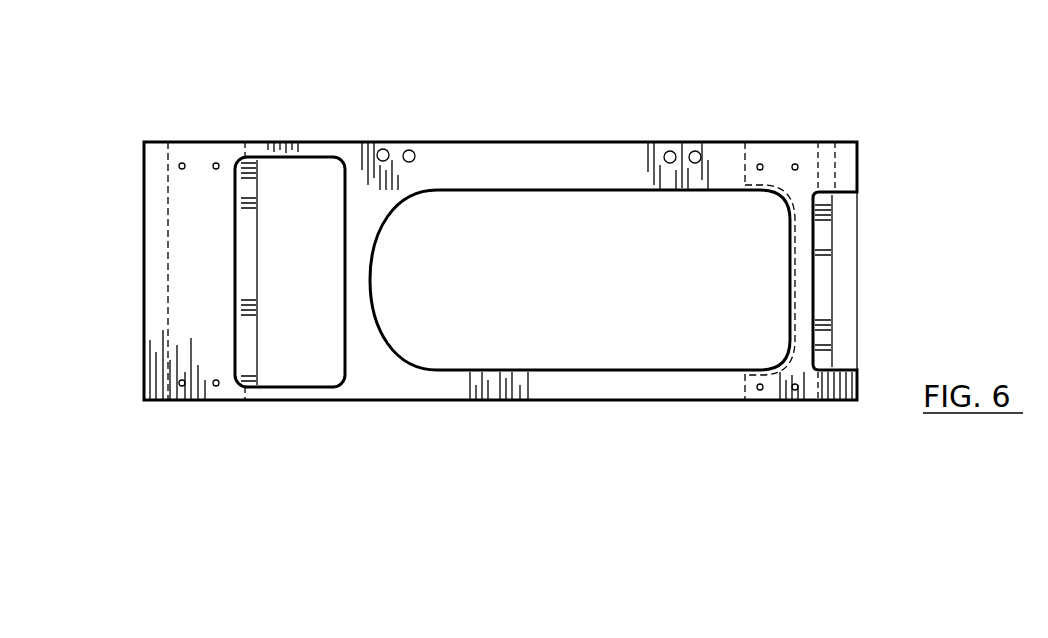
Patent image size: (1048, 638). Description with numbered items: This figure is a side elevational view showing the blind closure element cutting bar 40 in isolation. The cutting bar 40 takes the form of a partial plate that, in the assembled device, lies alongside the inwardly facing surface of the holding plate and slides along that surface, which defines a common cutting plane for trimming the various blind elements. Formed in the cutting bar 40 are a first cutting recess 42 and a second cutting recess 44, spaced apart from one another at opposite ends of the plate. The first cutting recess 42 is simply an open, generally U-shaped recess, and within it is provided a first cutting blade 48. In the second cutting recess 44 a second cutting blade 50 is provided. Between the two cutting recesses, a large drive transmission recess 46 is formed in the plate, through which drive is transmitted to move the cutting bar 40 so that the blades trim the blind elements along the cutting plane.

The cutting bar 40 is at (472, 142).
The first cutting recess 42 is at (853, 249).
The second cutting recess 44 is at (312, 193).
The drive transmission recess 46 is at (578, 247).
The first cutting blade 48 is at (830, 302).
The second cutting blade 50 is at (250, 243).